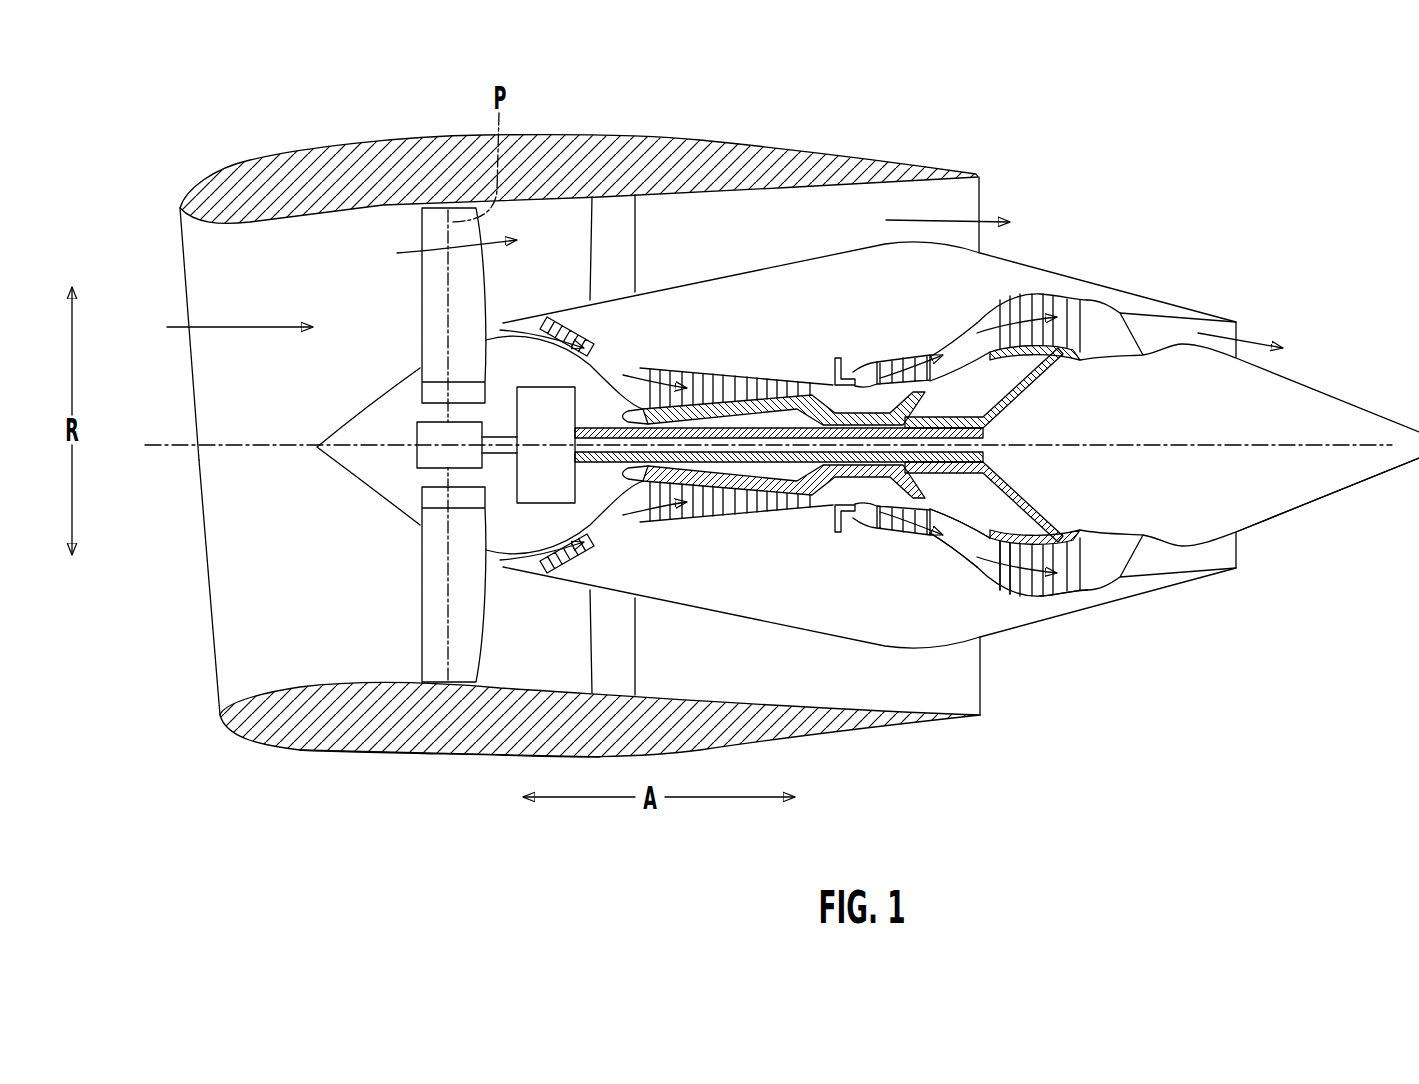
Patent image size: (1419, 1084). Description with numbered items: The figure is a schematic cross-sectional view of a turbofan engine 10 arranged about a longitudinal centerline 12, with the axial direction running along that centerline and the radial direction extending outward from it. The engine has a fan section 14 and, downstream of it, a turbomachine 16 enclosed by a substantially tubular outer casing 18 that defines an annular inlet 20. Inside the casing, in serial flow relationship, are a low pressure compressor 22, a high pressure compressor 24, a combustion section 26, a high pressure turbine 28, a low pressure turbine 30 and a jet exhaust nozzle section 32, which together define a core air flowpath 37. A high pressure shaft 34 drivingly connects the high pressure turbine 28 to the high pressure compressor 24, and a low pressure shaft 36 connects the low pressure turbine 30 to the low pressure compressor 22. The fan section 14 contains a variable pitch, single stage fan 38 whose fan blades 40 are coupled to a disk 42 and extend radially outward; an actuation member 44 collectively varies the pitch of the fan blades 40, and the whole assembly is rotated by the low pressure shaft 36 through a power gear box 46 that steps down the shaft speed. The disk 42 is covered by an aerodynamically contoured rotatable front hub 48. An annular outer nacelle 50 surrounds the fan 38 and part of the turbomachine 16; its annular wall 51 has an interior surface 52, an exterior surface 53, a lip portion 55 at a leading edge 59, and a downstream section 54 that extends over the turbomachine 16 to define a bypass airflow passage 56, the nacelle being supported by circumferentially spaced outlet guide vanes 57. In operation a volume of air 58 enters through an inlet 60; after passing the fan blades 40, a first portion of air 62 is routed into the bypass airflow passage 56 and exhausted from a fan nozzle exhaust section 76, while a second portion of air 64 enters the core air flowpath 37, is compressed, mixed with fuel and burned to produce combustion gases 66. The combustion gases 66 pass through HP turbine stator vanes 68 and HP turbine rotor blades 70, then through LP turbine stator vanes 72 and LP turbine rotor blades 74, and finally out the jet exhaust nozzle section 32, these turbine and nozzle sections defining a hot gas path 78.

The turbofan engine 10 is at (1148, 148).
The longitudinal centerline 12 is at (1180, 443).
The fan section 14 is at (378, 272).
The turbomachine 16 is at (793, 323).
The outer casing 18 is at (797, 628).
The annular inlet 20 is at (537, 567).
The low pressure compressor 22 is at (597, 533).
The high pressure compressor 24 is at (672, 520).
The combustion section 26 is at (847, 533).
The high pressure turbine 28 is at (933, 526).
The low pressure turbine 30 is at (1062, 585).
The jet exhaust nozzle section 32 is at (1146, 570).
The high pressure shaft 34 is at (860, 410).
The low pressure shaft 36 is at (940, 420).
The core air flowpath 37 is at (960, 548).
The fan 38 is at (350, 527).
The fan blades 40 is at (418, 600).
The disk 42 is at (422, 393).
The actuation member 44 is at (413, 430).
The power gear box 46 is at (560, 403).
The rotatable front nacelle or hub 48 is at (323, 457).
The outer nacelle 50 is at (455, 755).
The annular wall 51 is at (340, 722).
The interior surface 52 is at (330, 218).
The exterior surface 53 is at (293, 150).
The downstream section 54 is at (922, 171).
The lip portion 55 is at (178, 207).
The bypass airflow passage 56 is at (828, 239).
The outlet guide vanes 57 is at (637, 205).
The volume of air 58 is at (240, 327).
The leading edge 59 is at (220, 721).
The inlet 60 is at (218, 690).
The first portion of air 62 is at (430, 255).
The second portion of air 64 is at (505, 323).
The combustion gases 66 is at (923, 380).
The HP turbine stator vanes 68 is at (885, 530).
The HP turbine rotor blades 70 is at (905, 530).
The LP turbine stator vanes 72 is at (985, 565).
The LP turbine rotor blades 74 is at (1000, 570).
The fan nozzle exhaust section 76 is at (968, 196).
The hot gas path 78 is at (965, 335).